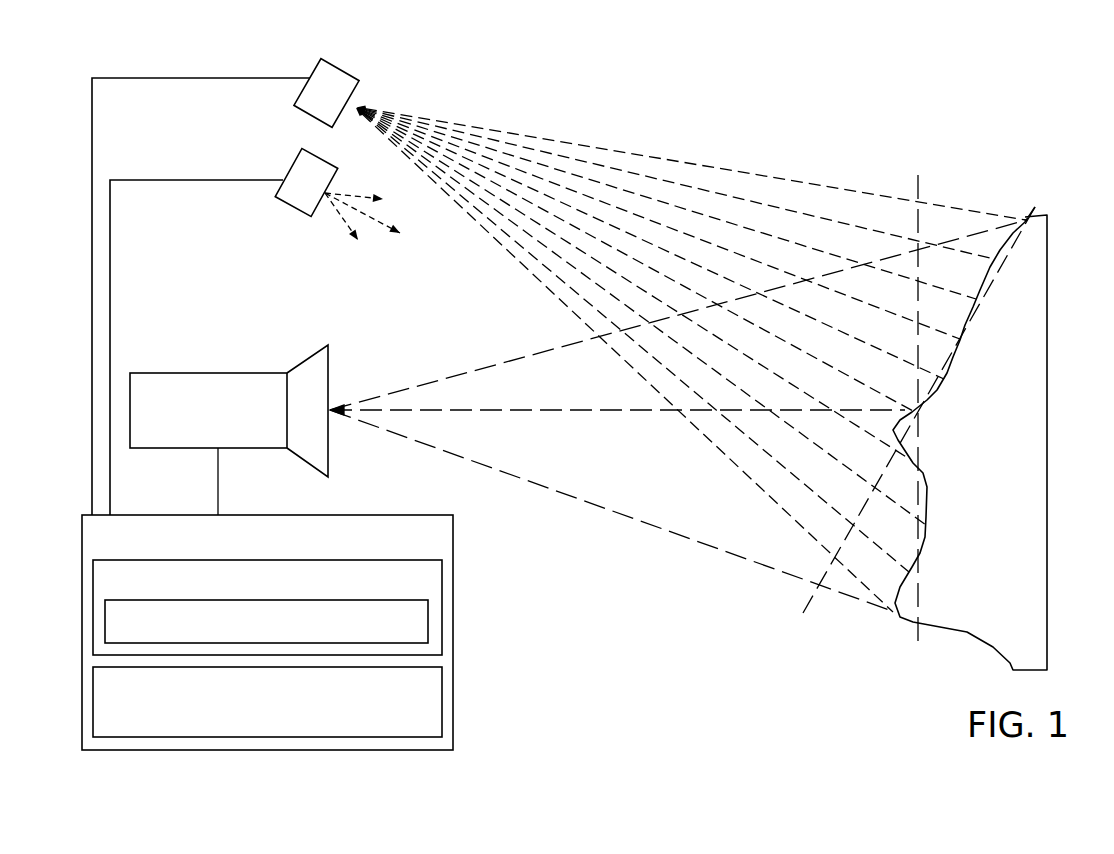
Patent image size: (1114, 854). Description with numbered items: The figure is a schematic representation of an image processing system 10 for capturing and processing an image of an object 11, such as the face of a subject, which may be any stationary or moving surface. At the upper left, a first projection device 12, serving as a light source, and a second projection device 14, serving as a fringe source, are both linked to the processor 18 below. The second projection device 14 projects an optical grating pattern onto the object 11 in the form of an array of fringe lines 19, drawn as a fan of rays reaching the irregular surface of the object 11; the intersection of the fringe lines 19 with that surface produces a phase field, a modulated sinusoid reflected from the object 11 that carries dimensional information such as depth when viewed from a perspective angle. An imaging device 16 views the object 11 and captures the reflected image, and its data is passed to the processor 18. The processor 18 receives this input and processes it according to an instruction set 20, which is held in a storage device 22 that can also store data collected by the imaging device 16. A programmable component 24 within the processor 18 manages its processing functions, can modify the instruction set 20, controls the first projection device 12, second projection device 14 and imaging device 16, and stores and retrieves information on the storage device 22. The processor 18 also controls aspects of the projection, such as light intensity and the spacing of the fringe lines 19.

The image processing system 10 is at (818, 84).
The object 11 is at (1033, 355).
The first projection device 12 is at (300, 150).
The second projection device 14 is at (338, 73).
The imaging device 16 is at (208, 373).
The processor 18 is at (453, 515).
The fringe lines 19 is at (710, 222).
The instruction set 20 is at (428, 600).
The storage device 22 is at (442, 560).
The programmable component 24 is at (442, 667).